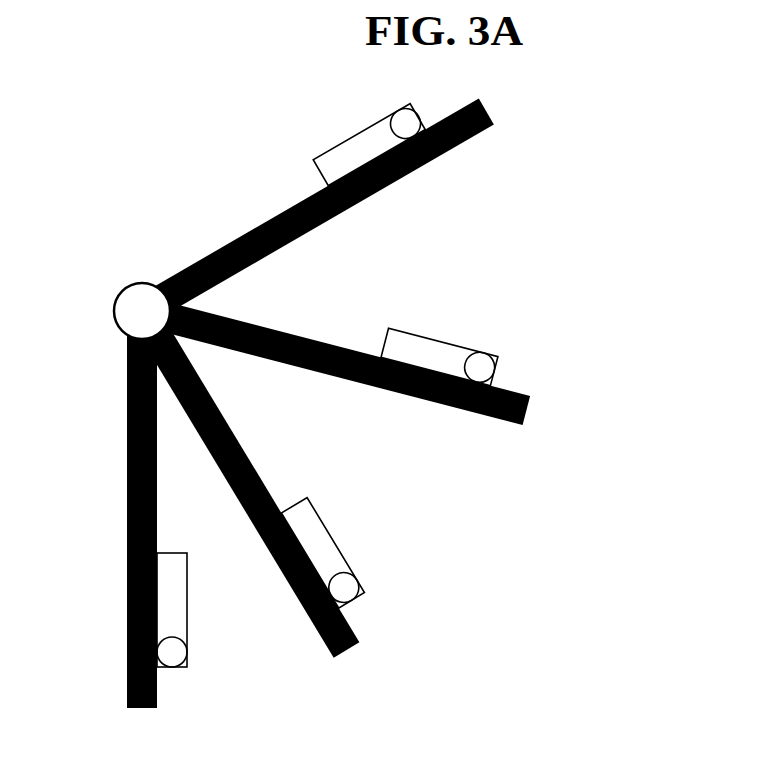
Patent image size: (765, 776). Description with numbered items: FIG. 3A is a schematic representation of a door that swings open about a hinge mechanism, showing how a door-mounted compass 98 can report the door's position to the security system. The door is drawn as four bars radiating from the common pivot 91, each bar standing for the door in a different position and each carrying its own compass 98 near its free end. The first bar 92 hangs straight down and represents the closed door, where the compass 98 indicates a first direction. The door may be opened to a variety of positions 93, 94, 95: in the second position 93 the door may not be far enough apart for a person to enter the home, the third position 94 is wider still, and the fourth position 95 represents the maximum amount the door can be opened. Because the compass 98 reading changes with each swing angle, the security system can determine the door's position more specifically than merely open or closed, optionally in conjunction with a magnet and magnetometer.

The central hub 91 is at (118, 311).
The first arm 92 is at (142, 528).
The second position 93 is at (253, 490).
The third position 94 is at (351, 363).
The fourth position 95 is at (326, 206).
The compass 98 is at (327, 385).